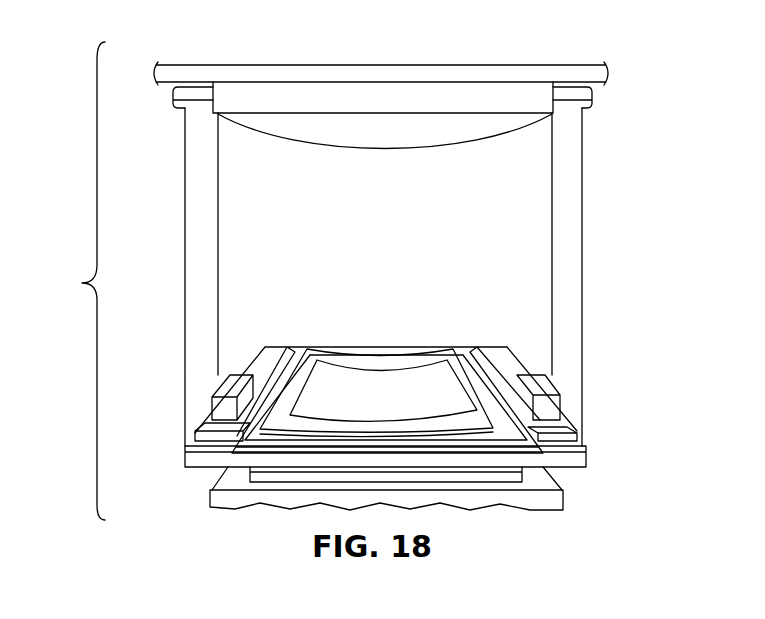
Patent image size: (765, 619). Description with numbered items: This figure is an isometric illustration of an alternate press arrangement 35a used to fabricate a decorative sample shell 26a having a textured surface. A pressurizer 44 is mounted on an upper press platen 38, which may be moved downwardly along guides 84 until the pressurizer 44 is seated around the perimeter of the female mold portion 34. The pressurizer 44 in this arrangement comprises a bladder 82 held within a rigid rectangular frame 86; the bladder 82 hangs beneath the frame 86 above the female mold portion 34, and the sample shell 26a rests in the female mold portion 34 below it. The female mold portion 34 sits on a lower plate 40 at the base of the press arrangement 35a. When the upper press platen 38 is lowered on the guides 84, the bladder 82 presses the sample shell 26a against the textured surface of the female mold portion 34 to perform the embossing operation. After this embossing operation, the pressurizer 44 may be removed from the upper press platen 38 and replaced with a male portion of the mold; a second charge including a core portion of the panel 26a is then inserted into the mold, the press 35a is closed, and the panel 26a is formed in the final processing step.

The upper press platen 38 is at (208, 76).
The pressurizer 44 is at (368, 97).
The rigid rectangular frame 86 is at (515, 98).
The guides 84 is at (203, 258).
The bladder 82 is at (340, 130).
The alternate press arrangement 35a is at (75, 281).
The sample shell 26a is at (327, 393).
The female mold portion 34 is at (578, 454).
The lower plate 40 is at (233, 497).